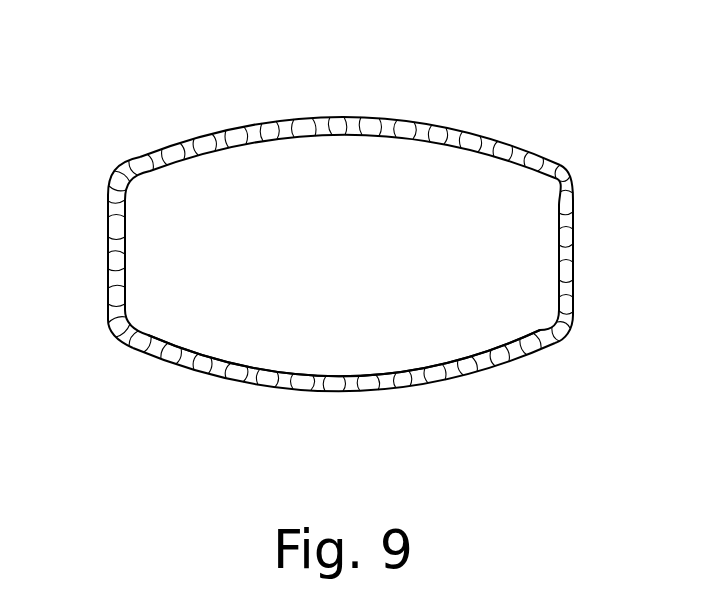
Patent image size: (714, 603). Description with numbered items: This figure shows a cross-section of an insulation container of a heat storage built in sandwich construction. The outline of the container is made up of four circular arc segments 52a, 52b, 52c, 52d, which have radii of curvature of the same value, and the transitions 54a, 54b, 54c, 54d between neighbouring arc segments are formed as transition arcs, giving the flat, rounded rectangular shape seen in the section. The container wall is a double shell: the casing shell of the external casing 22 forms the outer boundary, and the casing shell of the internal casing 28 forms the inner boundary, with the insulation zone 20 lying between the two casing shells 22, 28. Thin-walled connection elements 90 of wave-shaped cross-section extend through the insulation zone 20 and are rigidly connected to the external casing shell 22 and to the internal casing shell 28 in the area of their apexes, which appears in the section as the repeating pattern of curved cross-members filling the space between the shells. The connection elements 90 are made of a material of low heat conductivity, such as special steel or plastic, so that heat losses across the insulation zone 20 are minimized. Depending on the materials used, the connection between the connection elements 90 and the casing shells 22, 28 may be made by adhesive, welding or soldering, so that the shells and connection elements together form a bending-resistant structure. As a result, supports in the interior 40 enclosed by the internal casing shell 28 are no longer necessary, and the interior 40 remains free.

The insulation zone 20 is at (292, 133).
The casing shell of the external casing 22 is at (388, 117).
The casing shell of the internal casing 28 is at (332, 132).
The hollow interior 40 is at (250, 170).
The circular arc segment 52a is at (443, 133).
The circular arc segment 52b is at (564, 232).
The circular arc segment 52c is at (443, 368).
The circular arc segment 52d is at (110, 235).
The transition 54a is at (559, 173).
The transition 54b is at (563, 330).
The transition 54c is at (120, 337).
The transition 54d is at (120, 175).
The connection element 90 is at (283, 385).